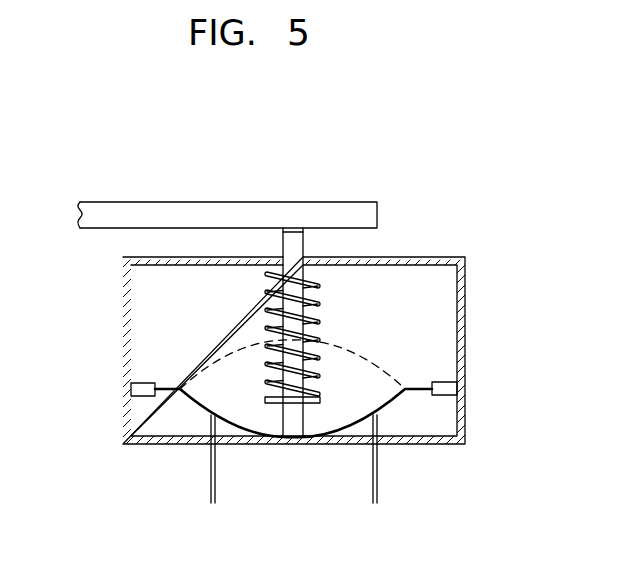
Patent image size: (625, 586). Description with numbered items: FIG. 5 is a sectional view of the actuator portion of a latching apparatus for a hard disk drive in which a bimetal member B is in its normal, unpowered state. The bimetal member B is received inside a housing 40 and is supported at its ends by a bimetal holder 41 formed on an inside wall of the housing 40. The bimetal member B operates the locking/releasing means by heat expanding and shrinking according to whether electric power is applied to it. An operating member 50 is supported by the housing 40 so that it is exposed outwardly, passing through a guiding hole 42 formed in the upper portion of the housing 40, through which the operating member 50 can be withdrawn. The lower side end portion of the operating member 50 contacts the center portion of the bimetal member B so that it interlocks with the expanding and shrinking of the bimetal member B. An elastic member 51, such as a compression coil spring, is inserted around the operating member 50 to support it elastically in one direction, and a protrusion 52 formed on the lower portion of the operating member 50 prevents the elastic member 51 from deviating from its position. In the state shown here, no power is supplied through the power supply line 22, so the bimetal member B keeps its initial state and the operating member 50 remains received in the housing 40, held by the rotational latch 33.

The rotational latch 33 is at (201, 212).
The housing 40 is at (123, 310).
The bimetal holder 41 is at (143, 386).
The guiding hole 42 is at (282, 253).
The operating member 50 is at (303, 243).
The elastic member 51 is at (309, 317).
The protrusion 52 is at (311, 403).
The power supply line 22 is at (212, 477).
The bimetal member B is at (393, 401).